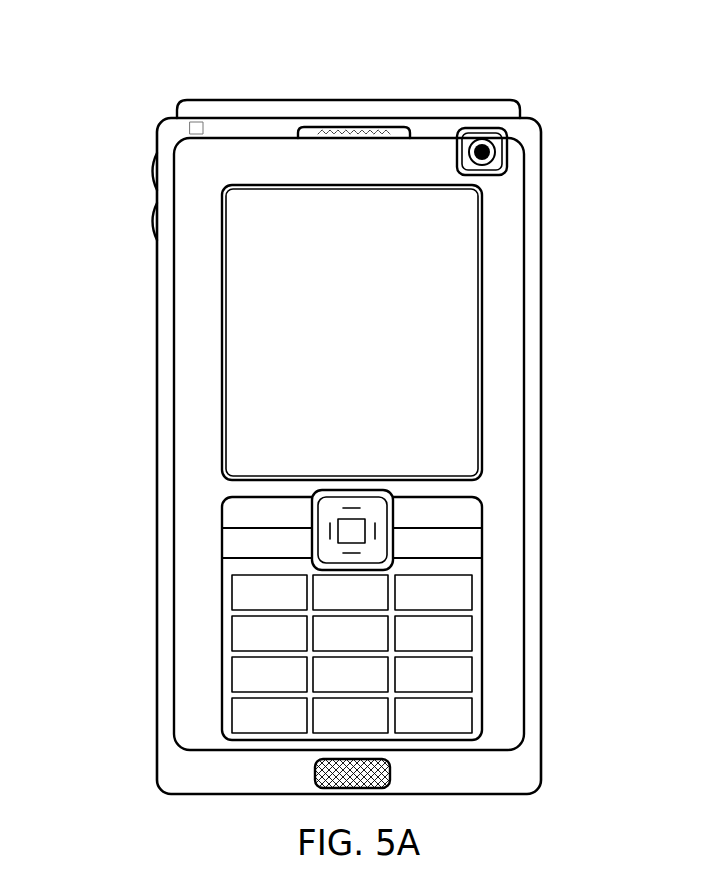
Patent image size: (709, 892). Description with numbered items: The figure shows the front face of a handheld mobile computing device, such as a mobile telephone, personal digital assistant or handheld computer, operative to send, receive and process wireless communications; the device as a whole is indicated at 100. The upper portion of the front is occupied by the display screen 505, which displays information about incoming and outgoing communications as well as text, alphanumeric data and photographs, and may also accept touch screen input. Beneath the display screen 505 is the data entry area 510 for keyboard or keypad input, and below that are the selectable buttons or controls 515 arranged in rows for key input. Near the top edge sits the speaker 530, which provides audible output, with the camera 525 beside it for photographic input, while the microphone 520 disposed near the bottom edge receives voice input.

The mobile device 100 is at (157, 122).
The display screen 505 is at (255, 317).
The data entry area 510 is at (222, 537).
The selectable buttons or controls 515 is at (243, 632).
The microphone 520 is at (315, 777).
The camera 525 is at (507, 161).
The speaker 530 is at (392, 130).